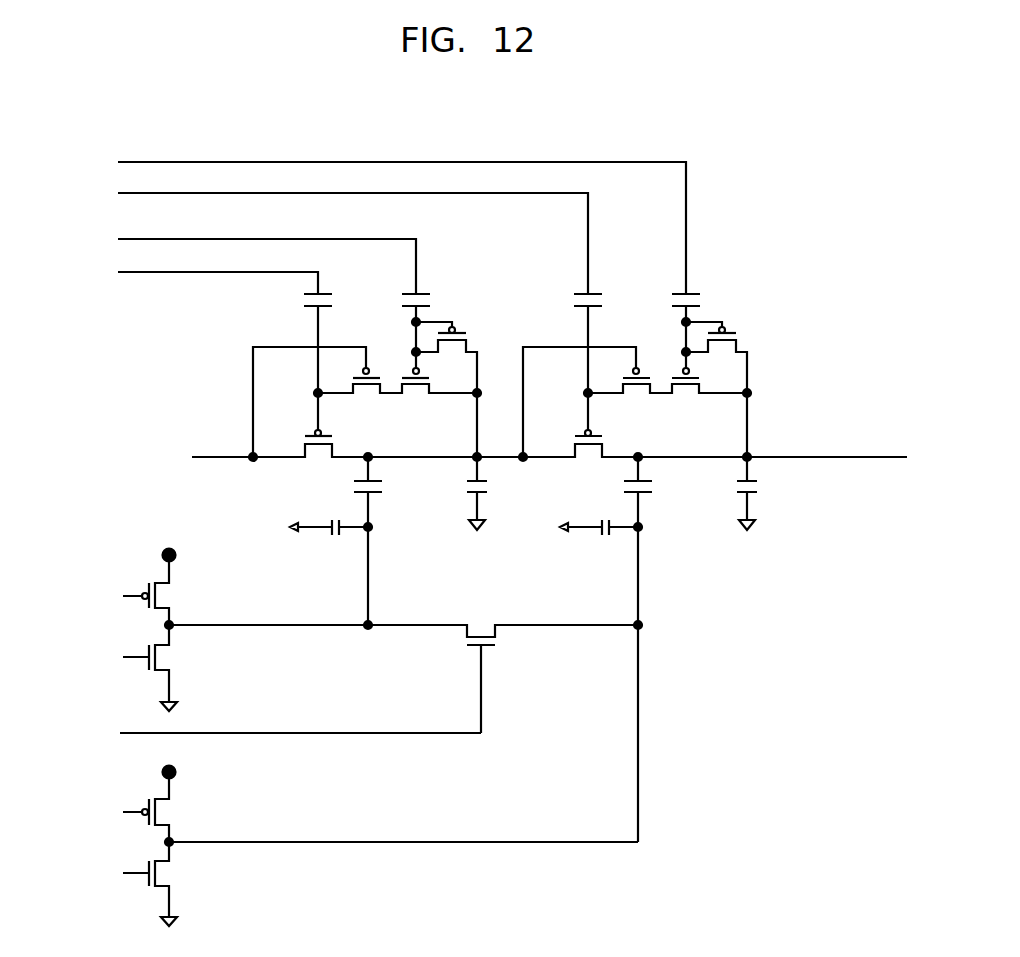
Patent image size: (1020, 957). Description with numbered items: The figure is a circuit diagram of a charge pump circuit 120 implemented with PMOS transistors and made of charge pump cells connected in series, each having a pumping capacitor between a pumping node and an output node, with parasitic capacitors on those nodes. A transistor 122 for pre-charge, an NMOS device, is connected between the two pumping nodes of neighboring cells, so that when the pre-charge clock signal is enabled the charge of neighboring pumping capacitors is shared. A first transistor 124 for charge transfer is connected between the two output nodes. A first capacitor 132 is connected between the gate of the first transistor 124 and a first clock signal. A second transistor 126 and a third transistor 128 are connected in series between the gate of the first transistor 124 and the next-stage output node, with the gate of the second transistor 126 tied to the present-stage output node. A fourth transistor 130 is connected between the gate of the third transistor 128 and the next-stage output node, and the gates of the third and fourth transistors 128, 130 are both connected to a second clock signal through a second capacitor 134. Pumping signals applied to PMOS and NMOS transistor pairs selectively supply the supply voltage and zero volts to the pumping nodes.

The charge pump circuit 120 is at (770, 198).
The transistor for pre-charge 122 is at (481, 664).
The first transistor 124 is at (591, 439).
The second transistor 126 is at (624, 393).
The third transistor 128 is at (704, 370).
The fourth transistor 130 is at (716, 389).
The first capacitor 132 is at (612, 341).
The second capacitor 134 is at (710, 306).